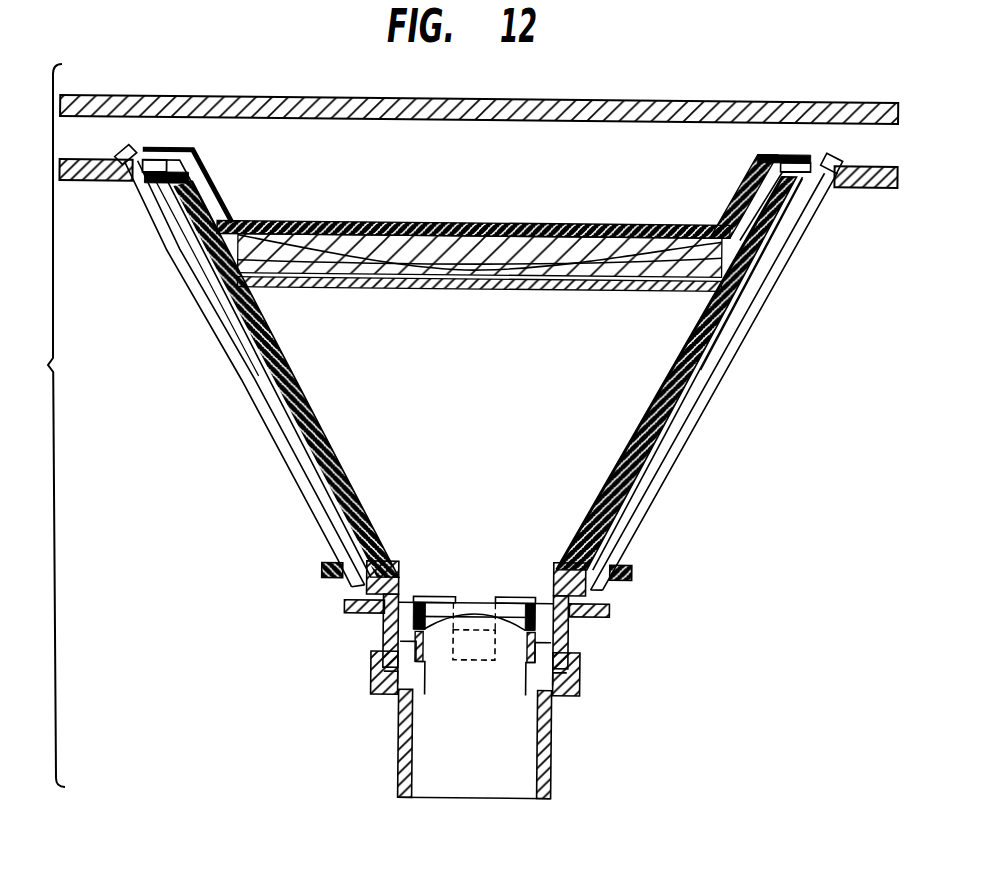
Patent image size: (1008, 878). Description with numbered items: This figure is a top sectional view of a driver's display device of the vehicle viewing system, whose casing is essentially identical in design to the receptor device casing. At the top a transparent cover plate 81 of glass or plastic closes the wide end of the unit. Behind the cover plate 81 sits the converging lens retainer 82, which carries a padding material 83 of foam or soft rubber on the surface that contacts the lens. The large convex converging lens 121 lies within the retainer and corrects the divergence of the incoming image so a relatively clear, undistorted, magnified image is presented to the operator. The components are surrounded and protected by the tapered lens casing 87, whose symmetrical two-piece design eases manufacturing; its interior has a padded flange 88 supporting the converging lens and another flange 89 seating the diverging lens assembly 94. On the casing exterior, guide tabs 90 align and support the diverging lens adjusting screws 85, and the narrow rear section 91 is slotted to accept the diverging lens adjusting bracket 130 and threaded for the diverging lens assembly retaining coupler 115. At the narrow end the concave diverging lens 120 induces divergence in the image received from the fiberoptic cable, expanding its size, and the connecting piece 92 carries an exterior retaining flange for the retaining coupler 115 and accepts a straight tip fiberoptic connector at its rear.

The cover plate 81 is at (630, 97).
The converging lens retainer 82 is at (212, 188).
The padding material 83 is at (236, 252).
The diverging lens adjusting screws 85 is at (278, 453).
The lens casing 87 is at (296, 392).
The padded flange 88 is at (610, 290).
The converging lens 121 is at (733, 256).
The guide tabs 90 is at (323, 575).
The diverging lens adjusting bracket 130 is at (346, 608).
The diverging lens assembly retaining coupler 115 is at (373, 677).
The diverging lens 120 is at (518, 620).
The flange 89 is at (430, 685).
The rear section 91 is at (596, 738).
The connecting piece 92 is at (399, 759).
The diverging lens assembly 94 is at (726, 427).